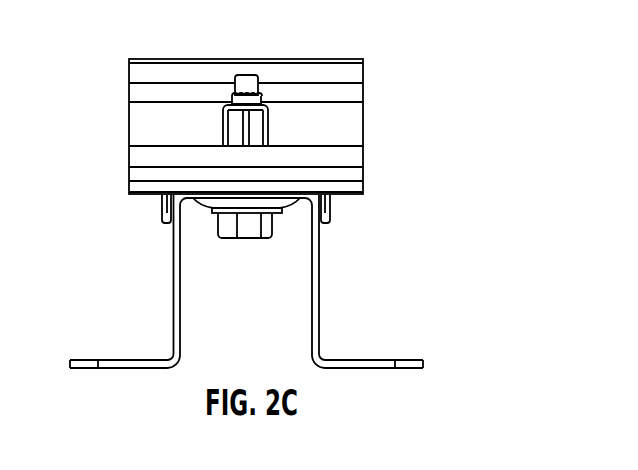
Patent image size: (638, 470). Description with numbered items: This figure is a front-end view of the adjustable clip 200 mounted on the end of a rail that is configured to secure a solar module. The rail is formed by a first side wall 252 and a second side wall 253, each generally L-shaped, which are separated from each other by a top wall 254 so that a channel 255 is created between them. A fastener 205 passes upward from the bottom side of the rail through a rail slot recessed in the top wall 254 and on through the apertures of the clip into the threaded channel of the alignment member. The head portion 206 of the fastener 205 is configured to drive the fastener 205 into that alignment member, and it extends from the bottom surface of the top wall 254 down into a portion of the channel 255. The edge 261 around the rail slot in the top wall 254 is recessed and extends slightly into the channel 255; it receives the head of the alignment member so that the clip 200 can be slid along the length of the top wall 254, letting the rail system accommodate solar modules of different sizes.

The adjustable clip 200 is at (365, 38).
The fastener 205 is at (247, 82).
The head portion 206 is at (248, 238).
The first side wall 252 is at (173, 328).
The second side wall 253 is at (319, 332).
The top wall 254 is at (192, 200).
The edge 261 is at (283, 205).
The channel 255 is at (272, 347).